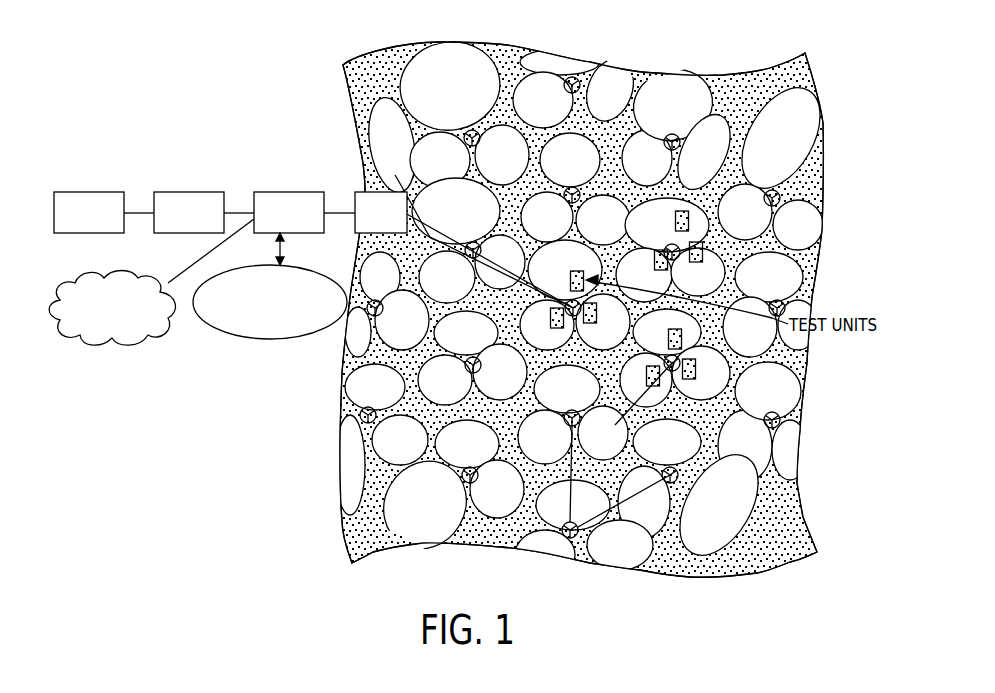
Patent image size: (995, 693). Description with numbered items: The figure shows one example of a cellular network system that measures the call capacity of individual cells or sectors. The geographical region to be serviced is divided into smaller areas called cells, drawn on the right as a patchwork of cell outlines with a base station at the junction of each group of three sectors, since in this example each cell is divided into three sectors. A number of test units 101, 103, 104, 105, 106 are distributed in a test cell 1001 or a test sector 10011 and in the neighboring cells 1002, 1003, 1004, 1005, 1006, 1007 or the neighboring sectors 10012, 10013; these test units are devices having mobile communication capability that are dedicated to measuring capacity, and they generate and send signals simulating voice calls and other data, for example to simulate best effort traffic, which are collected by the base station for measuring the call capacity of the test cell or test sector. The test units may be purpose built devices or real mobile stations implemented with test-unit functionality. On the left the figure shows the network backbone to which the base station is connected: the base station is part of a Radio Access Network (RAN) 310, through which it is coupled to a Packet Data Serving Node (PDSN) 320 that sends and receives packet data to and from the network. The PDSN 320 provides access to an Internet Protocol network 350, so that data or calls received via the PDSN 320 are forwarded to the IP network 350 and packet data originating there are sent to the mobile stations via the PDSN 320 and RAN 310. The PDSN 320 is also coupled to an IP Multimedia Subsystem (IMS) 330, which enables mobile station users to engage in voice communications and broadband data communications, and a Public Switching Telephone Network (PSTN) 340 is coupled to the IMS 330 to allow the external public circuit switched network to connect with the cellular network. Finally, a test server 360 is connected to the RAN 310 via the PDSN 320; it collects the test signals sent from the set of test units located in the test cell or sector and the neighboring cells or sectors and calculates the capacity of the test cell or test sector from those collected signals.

The Radio Access Network (RAN) 310 is at (363, 192).
The Packet Data Serving Node (PDSN) 320 is at (278, 192).
The IP Multimedia Subsystem (IMS) 330 is at (178, 192).
The Public Switching Telephone Network (PSTN) 340 is at (78, 192).
The Internet Protocol network 350 is at (102, 341).
The test server 360 is at (247, 338).
The test cell 1001 is at (501, 262).
The neighboring cell 1002 is at (733, 161).
The neighboring cell 1003 is at (634, 106).
The neighboring cell 1004 is at (412, 178).
The neighboring cell 1005 is at (418, 410).
The neighboring cell 1006 is at (569, 554).
The neighboring cell 1007 is at (745, 381).
The test sector 10011 is at (558, 238).
The neighboring sector 10012 is at (567, 389).
The neighboring sector 10013 is at (667, 442).
The test unit 101 is at (665, 250).
The test unit 103 is at (573, 316).
The test unit 104 is at (685, 207).
The test unit 105 is at (664, 248).
The test unit 106 is at (722, 232).